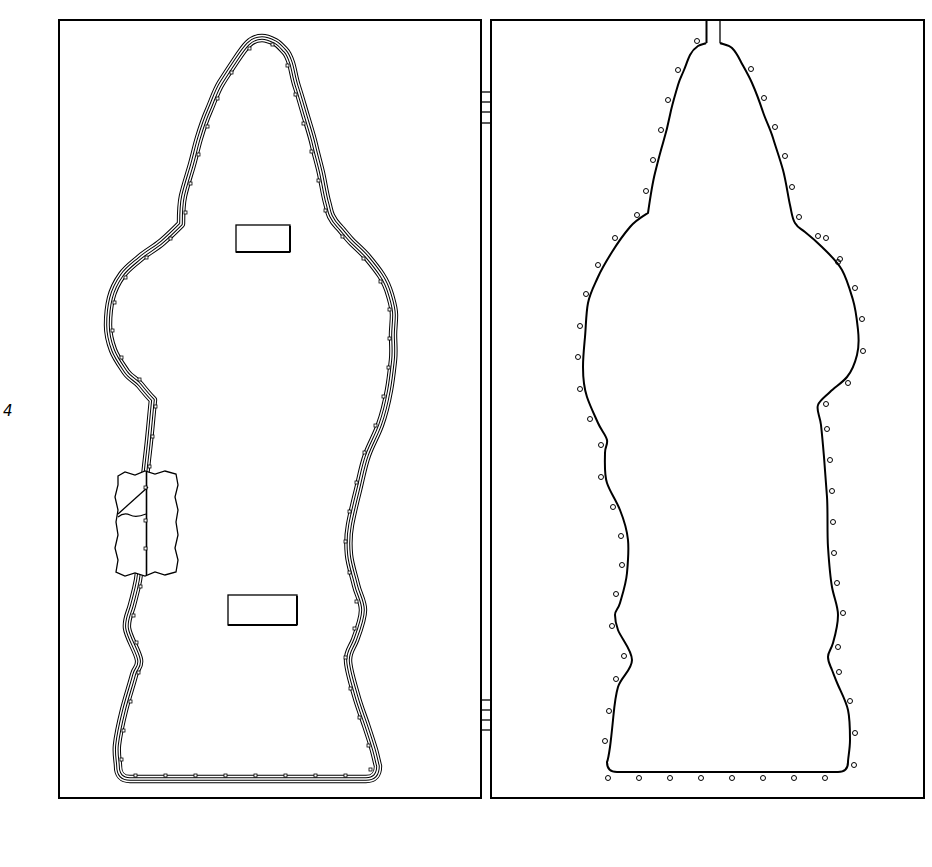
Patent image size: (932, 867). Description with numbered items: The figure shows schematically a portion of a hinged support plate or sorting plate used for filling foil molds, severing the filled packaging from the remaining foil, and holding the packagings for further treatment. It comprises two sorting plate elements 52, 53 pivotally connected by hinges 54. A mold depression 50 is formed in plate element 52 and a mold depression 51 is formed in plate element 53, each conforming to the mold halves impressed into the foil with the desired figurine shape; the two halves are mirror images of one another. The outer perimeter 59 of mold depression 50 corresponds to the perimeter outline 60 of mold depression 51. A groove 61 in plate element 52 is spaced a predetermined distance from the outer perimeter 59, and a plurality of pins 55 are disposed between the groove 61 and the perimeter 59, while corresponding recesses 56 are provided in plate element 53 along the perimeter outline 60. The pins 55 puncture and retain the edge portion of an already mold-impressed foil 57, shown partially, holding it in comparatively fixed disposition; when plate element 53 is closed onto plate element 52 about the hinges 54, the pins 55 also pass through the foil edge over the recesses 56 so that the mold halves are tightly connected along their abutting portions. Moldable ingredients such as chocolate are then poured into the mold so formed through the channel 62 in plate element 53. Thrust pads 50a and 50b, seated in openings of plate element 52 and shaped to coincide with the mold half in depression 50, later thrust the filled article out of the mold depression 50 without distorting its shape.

The mold depression 50 is at (272, 388).
The thrust pad 50a is at (289, 246).
The thrust pad 50b is at (283, 617).
The mold depression 51 is at (726, 405).
The sorting plate element 52 is at (450, 398).
The sorting plate element 53 is at (554, 398).
The hinges 54 is at (492, 104).
The pins 55 is at (182, 221).
The recesses 56 is at (839, 259).
The foil 57 is at (166, 497).
The outer perimeter 59 is at (194, 157).
The perimeter outline 60 is at (776, 151).
The groove 61 is at (200, 126).
The channel 62 is at (720, 34).